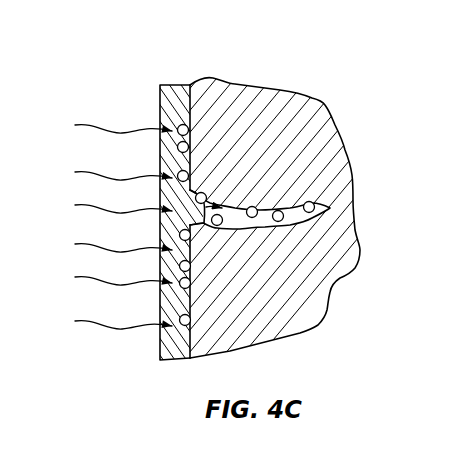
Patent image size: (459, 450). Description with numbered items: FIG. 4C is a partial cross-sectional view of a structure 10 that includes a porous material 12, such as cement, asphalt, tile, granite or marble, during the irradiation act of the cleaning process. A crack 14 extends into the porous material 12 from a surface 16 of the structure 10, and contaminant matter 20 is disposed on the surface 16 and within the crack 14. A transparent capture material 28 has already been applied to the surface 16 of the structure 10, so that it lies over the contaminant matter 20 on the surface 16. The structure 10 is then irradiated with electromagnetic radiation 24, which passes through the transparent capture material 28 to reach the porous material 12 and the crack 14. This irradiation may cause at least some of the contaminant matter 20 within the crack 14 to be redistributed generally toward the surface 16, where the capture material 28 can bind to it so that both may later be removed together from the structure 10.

The structure 10 is at (346, 85).
The porous material 12 is at (325, 143).
The crack 14 is at (196, 198).
The surface 16 is at (180, 103).
The contaminant matter 20 is at (177, 147).
The electromagnetic radiation 24 is at (123, 339).
The capture material 28 is at (165, 301).